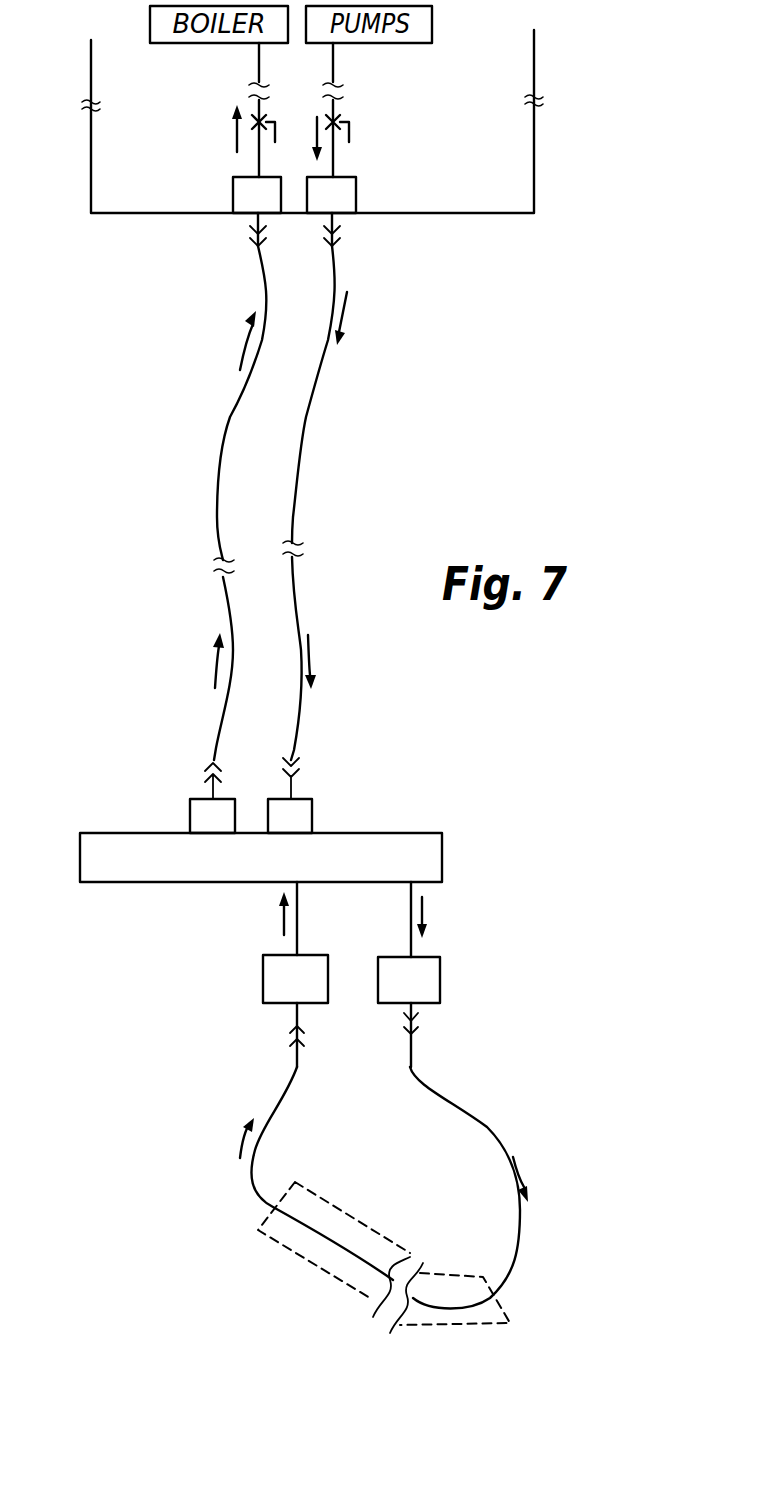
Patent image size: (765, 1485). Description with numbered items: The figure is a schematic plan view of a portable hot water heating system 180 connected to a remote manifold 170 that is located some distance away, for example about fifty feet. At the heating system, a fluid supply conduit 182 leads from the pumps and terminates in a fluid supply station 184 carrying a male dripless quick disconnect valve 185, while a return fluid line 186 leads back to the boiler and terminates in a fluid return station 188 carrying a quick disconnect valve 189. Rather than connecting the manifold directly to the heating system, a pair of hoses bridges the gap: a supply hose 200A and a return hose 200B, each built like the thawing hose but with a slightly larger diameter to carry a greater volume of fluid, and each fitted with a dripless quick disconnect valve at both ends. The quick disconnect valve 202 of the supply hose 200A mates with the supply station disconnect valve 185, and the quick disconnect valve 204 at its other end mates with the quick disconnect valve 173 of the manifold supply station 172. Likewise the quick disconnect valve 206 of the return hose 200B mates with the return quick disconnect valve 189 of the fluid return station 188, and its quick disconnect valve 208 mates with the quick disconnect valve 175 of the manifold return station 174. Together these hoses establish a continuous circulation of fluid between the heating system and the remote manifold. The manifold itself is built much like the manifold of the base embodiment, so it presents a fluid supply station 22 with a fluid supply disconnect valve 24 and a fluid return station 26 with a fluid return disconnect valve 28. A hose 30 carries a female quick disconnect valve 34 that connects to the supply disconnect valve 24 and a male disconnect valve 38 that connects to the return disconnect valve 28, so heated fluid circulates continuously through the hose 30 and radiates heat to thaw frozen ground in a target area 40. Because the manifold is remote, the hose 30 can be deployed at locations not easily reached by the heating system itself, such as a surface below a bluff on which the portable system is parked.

The hot water heating system 180 is at (534, 145).
The return fluid line 186 is at (259, 60).
The fluid supply conduit 182 is at (333, 57).
The fluid return station 188 is at (233, 190).
The fluid supply station 184 is at (356, 190).
The quick disconnect valve 189 is at (258, 218).
The male dripless quick disconnect valve 185 is at (332, 218).
The quick disconnect valve 206 is at (253, 242).
The quick disconnect valve 202 is at (333, 247).
The supply hose 200A is at (323, 365).
The return hose 200B is at (233, 413).
The quick disconnect valve 208 is at (208, 762).
The quick disconnect valve 204 is at (295, 764).
The quick disconnect valve 175 is at (202, 772).
The quick disconnect valve 173 is at (296, 770).
The manifold return station 174 is at (190, 815).
The manifold supply station 172 is at (312, 810).
The remote manifold 170 is at (442, 845).
The fluid return station 26 is at (263, 975).
The fluid supply station 22 is at (440, 975).
The fluid return disconnect valve 28 is at (297, 1025).
The fluid supply disconnect valve 24 is at (415, 1020).
The male disconnect valve 38 is at (299, 1040).
The female quick disconnect valve 34 is at (413, 1032).
The hose 30 is at (485, 1120).
The target area 40 is at (300, 1262).